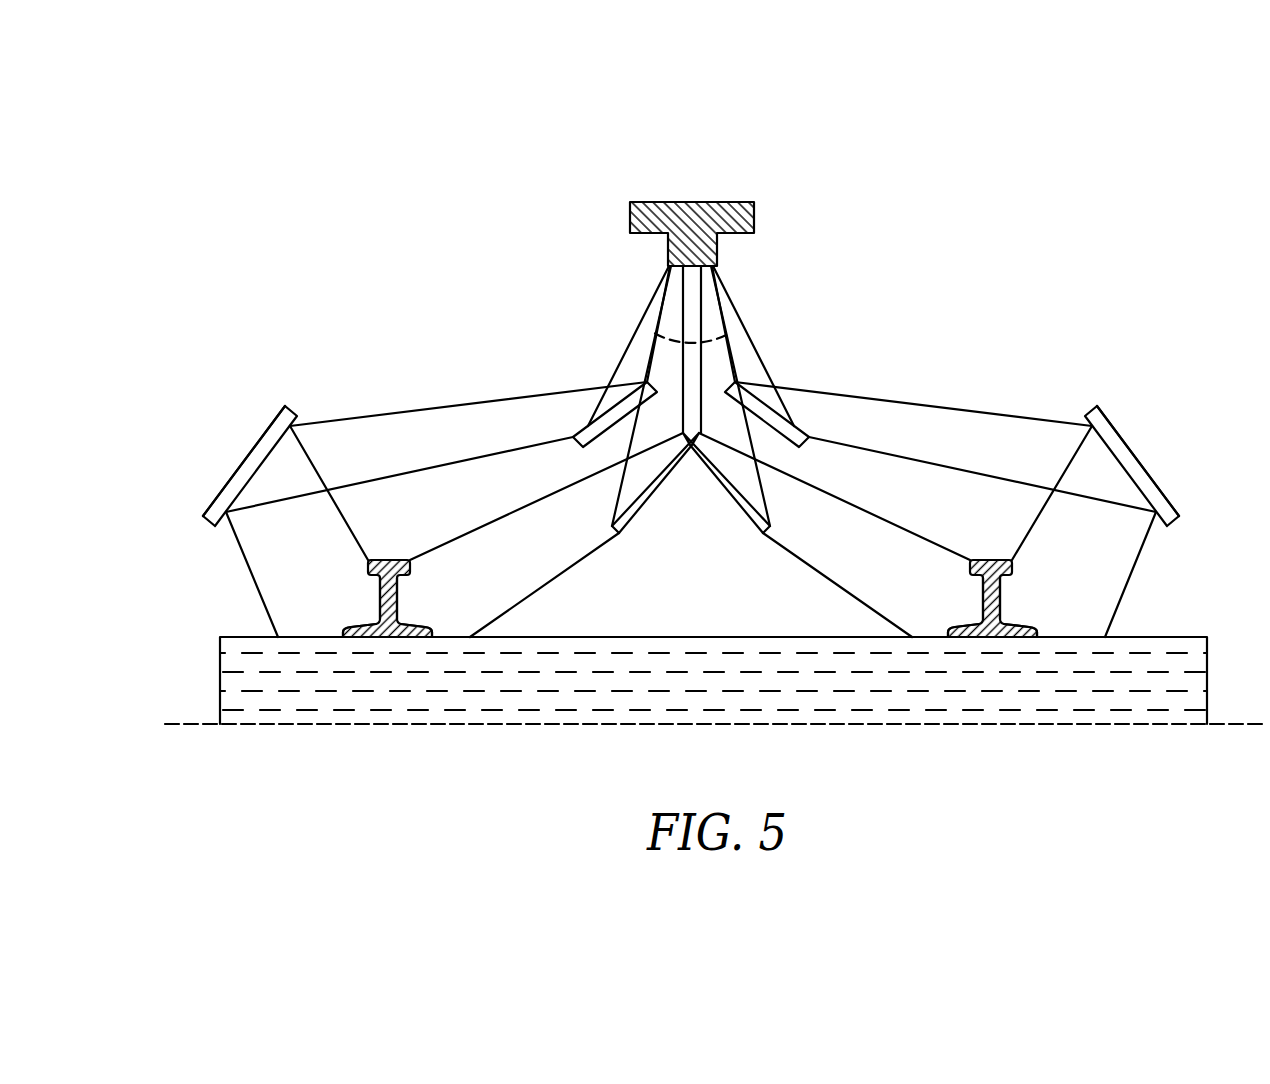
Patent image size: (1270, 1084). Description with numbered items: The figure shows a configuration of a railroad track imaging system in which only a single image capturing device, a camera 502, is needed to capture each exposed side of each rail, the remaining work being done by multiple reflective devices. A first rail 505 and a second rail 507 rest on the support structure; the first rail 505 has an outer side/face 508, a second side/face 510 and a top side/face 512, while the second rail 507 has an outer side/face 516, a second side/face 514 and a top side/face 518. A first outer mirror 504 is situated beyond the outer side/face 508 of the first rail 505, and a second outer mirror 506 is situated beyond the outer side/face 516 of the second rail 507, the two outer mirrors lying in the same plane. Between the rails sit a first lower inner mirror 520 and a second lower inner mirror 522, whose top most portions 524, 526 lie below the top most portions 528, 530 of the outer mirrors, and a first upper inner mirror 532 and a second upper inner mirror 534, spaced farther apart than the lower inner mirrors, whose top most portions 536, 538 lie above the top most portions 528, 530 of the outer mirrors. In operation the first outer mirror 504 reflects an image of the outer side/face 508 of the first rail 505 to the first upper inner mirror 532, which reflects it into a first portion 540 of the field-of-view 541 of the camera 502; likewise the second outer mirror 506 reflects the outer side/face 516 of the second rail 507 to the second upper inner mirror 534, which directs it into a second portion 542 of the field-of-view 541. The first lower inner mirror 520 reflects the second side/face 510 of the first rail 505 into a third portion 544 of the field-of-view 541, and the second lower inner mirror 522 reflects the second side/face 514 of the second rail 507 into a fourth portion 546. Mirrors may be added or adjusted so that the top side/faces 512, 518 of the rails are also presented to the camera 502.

The camera 502 is at (691, 202).
The first outer mirror 504 is at (246, 456).
The first rail 505 is at (405, 627).
The second outer mirror 506 is at (1110, 422).
The second rail 507 is at (1006, 627).
The outer side/face of the first rail 508 is at (364, 590).
The second side/face of the first rail 510 is at (413, 590).
The top side/face of the first rail 512 is at (389, 543).
The second side/face of the second rail 514 is at (969, 590).
The outer side/face of the second rail 516 is at (1018, 590).
The top side/face of the second rail 518 is at (991, 543).
The first lower inner mirror 520 is at (624, 534).
The second lower inner mirror 522 is at (758, 534).
The top most portion of the first lower inner mirror 524 is at (662, 430).
The top most portion of the second lower inner mirror 526 is at (716, 430).
The top most portion of the first outer mirror 528 is at (309, 394).
The top most portion of the second outer mirror 530 is at (1073, 394).
The first upper inner mirror 532 is at (584, 452).
The second upper inner mirror 534 is at (798, 452).
The top most portion of the first upper inner mirror 536 is at (646, 373).
The top most portion of the second upper inner mirror 538 is at (730, 380).
The first portion of the field-of-view 540 is at (651, 288).
The field-of-view 541 is at (728, 337).
The second portion of the field-of-view 542 is at (731, 276).
The third portion of the field-of-view 544 is at (657, 325).
The fourth portion of the field-of-view 546 is at (721, 316).